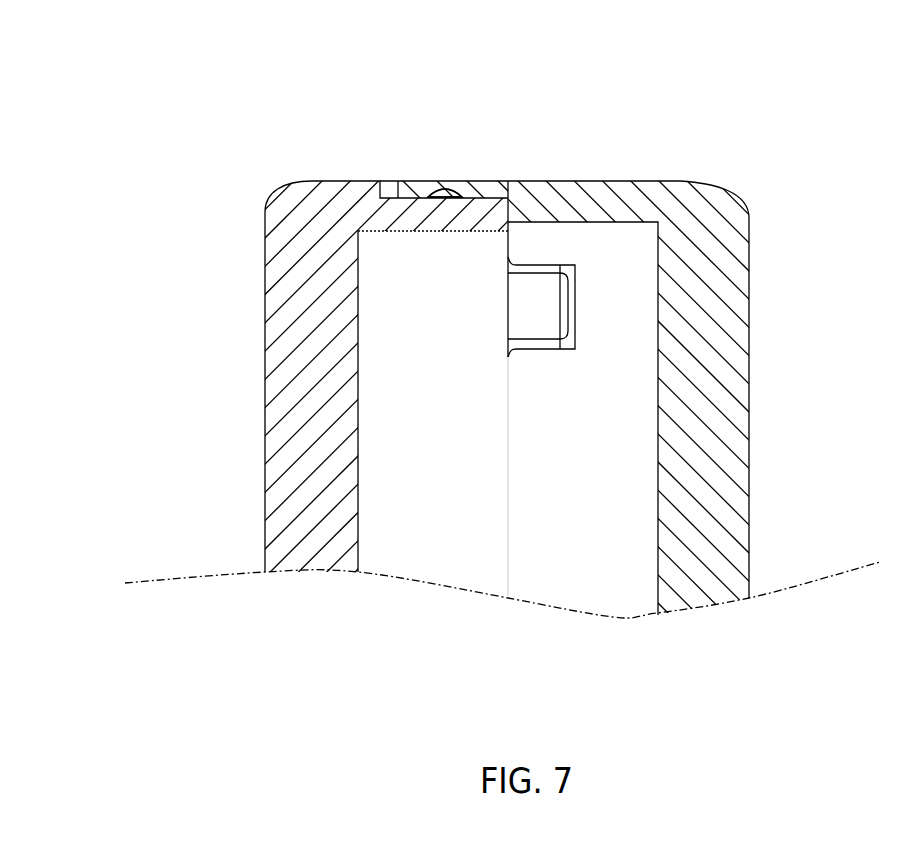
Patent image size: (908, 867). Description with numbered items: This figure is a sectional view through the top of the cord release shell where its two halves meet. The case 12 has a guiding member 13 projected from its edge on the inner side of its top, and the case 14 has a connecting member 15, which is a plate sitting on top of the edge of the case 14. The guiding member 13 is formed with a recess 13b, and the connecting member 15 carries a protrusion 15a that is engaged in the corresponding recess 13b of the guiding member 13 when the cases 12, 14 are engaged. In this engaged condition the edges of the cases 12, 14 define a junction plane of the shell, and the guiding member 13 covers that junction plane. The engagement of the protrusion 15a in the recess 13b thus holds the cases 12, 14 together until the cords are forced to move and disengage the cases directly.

The case 12 is at (736, 307).
The guiding member 13 is at (488, 183).
The recess 13b is at (445, 190).
The protrusion 15a is at (445, 193).
The case 14 is at (272, 330).
The connecting member 15 is at (338, 212).